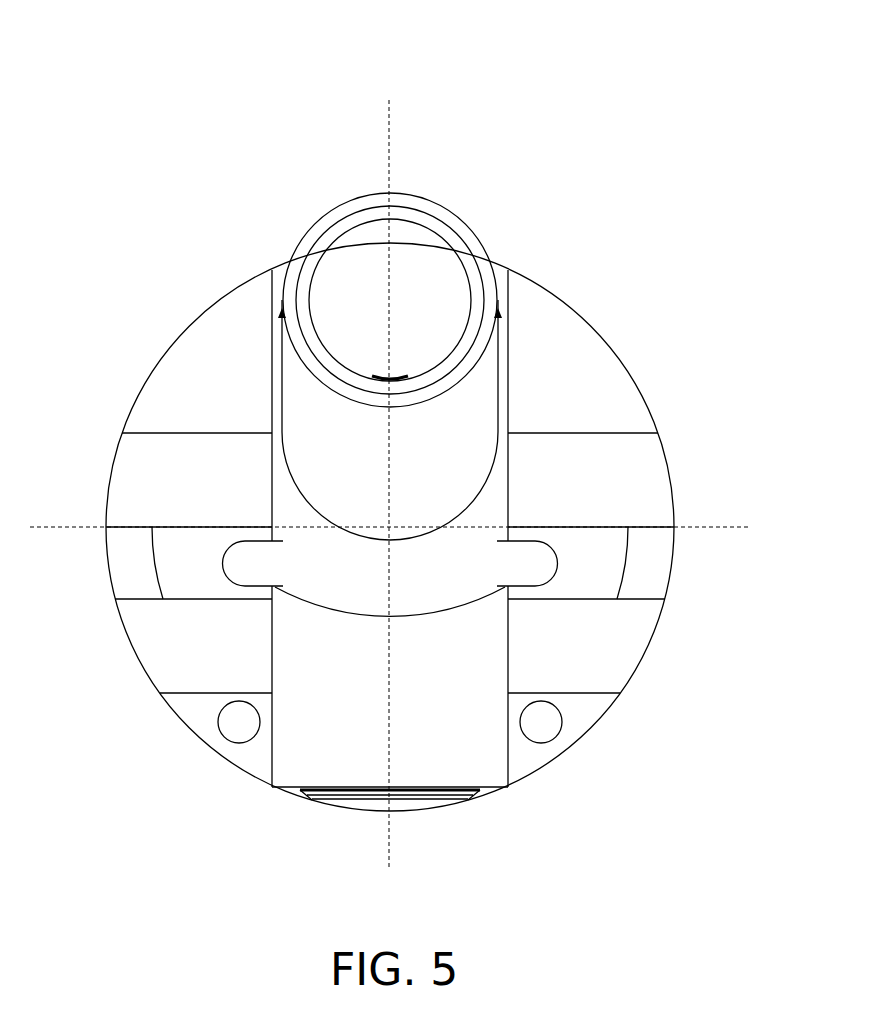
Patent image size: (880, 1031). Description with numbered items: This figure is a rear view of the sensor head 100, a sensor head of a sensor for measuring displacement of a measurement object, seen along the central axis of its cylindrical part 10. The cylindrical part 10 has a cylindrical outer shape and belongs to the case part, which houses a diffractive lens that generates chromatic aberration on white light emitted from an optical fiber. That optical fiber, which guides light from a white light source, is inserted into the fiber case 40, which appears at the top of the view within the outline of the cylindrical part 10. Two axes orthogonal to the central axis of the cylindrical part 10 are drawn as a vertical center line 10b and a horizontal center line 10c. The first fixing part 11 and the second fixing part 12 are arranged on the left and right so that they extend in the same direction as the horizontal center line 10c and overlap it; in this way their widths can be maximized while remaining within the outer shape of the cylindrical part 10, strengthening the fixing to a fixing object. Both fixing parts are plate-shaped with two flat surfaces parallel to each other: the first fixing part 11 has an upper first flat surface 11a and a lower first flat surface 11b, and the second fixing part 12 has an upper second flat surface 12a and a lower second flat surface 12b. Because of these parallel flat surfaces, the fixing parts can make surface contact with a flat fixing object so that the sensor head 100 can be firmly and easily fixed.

The sensor head 100 is at (552, 204).
The cylindrical part 10 is at (160, 358).
The vertical center line 10b is at (386, 126).
The horizontal center line 10c is at (730, 526).
The fiber case 40 is at (318, 218).
The first fixing part 11 is at (106, 564).
The upper first flat surface 11a is at (176, 518).
The lower first flat surface 11b is at (176, 607).
The second fixing part 12 is at (675, 568).
The upper second flat surface 12a is at (604, 518).
The lower second flat surface 12b is at (604, 607).